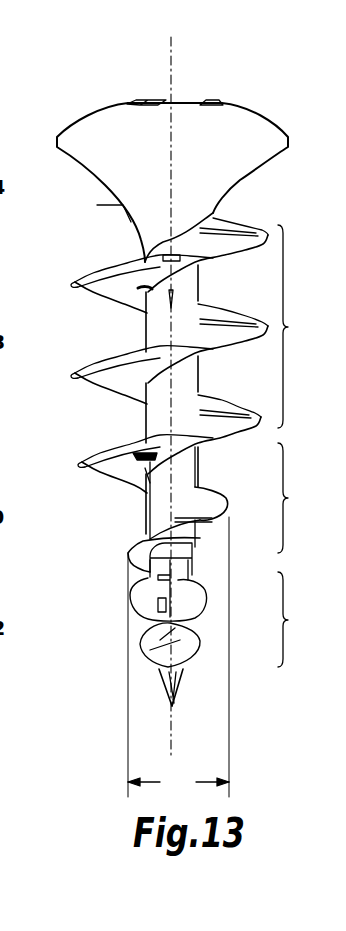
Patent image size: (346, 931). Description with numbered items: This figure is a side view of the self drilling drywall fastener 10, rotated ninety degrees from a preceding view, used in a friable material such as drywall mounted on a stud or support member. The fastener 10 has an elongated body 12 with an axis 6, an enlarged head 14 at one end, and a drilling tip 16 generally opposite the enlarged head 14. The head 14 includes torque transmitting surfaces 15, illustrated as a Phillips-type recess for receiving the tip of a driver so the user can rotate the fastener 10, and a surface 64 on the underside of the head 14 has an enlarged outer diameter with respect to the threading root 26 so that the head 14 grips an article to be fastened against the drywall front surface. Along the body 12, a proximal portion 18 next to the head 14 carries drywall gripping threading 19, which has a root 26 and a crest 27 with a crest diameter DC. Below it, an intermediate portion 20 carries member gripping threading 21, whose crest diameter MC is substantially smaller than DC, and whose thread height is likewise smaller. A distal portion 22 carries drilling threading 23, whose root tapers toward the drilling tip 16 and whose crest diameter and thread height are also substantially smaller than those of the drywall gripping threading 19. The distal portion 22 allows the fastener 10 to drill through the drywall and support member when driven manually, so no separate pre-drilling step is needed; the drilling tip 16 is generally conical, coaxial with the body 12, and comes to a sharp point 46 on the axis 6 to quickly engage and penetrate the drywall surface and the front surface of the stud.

The drywall fastener 10 is at (93, 504).
The axis 6 is at (170, 57).
The enlarged head 14 is at (95, 118).
The torque transmitting surfaces 15 is at (205, 100).
The surface on the underside of the enlarged head 64 is at (250, 166).
The crest 27 is at (75, 282).
The drywall gripping threading 19 is at (103, 288).
The root 26 is at (146, 330).
The elongated body 12 is at (148, 410).
The proximal portion 18 is at (297, 326).
The intermediate portion 20 is at (297, 498).
The member gripping threading 21 is at (216, 498).
The distal portion 22 is at (297, 619).
The drilling threading 23 is at (158, 672).
The drilling tip 16 is at (170, 706).
The point 46 is at (173, 706).